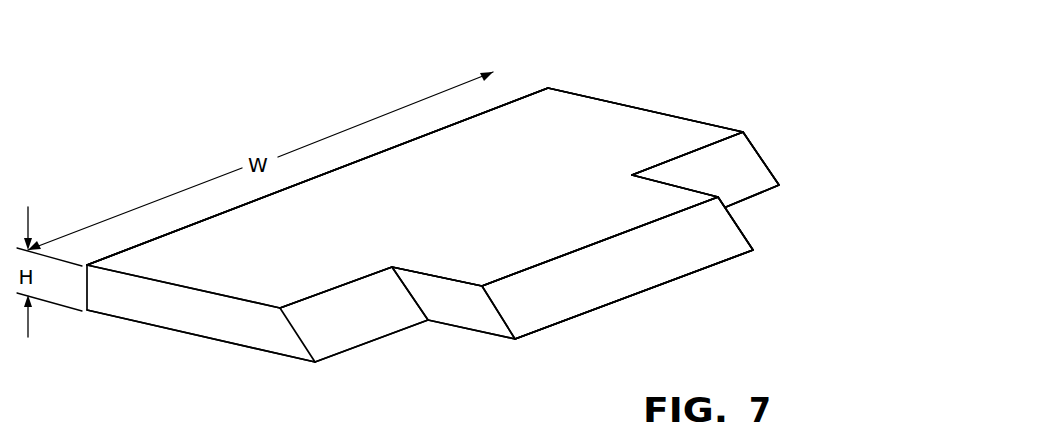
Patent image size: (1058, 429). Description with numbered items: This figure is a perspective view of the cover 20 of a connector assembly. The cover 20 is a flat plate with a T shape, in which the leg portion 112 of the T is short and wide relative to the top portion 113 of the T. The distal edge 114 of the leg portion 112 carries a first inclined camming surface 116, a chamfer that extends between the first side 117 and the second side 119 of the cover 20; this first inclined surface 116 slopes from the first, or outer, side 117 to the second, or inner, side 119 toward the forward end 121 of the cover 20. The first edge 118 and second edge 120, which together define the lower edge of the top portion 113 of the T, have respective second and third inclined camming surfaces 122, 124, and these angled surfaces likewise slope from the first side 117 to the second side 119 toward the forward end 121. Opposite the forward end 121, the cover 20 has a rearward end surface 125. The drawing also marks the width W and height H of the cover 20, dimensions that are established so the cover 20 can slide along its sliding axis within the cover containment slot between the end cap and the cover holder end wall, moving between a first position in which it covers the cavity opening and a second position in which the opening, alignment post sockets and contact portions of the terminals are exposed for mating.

The cover 20 is at (215, 385).
The leg portion 112 is at (638, 215).
The top portion 113 is at (605, 130).
The distal edge 114 is at (537, 285).
The first inclined camming surface 116 is at (645, 270).
The first side 117 is at (547, 115).
The first edge 118 is at (320, 320).
The second side 119 is at (208, 338).
The second edge 120 is at (707, 162).
The forward end 121 is at (728, 259).
The second inclined camming surface 122 is at (378, 306).
The third inclined camming surface 124 is at (748, 187).
The rearward end surface 125 is at (175, 232).